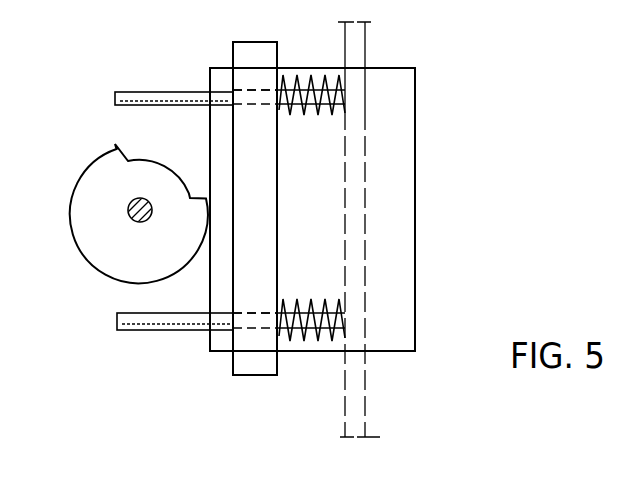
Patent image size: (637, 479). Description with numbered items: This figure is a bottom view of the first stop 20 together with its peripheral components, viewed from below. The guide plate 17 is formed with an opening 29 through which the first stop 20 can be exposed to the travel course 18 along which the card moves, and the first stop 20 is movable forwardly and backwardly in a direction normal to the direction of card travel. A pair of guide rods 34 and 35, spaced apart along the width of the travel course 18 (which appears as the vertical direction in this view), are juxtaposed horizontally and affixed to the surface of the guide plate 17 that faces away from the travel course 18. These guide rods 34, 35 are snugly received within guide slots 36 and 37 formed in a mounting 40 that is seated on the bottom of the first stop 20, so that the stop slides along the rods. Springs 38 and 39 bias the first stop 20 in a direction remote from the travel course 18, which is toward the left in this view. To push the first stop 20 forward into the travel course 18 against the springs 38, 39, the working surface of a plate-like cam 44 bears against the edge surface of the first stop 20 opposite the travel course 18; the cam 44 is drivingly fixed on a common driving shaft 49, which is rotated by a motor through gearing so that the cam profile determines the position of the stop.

The guide plate 17 is at (355, 52).
The travel course 18 is at (388, 322).
The first stop 20 is at (397, 125).
The opening 29 is at (355, 213).
The guide rod 34 is at (170, 92).
The guide rod 35 is at (158, 322).
The guide slot 36 is at (262, 104).
The guide slot 37 is at (243, 313).
The spring 38 is at (313, 115).
The spring 39 is at (316, 340).
The mounting 40 is at (255, 363).
The cam 44 is at (92, 200).
The driving shaft 49 is at (138, 223).